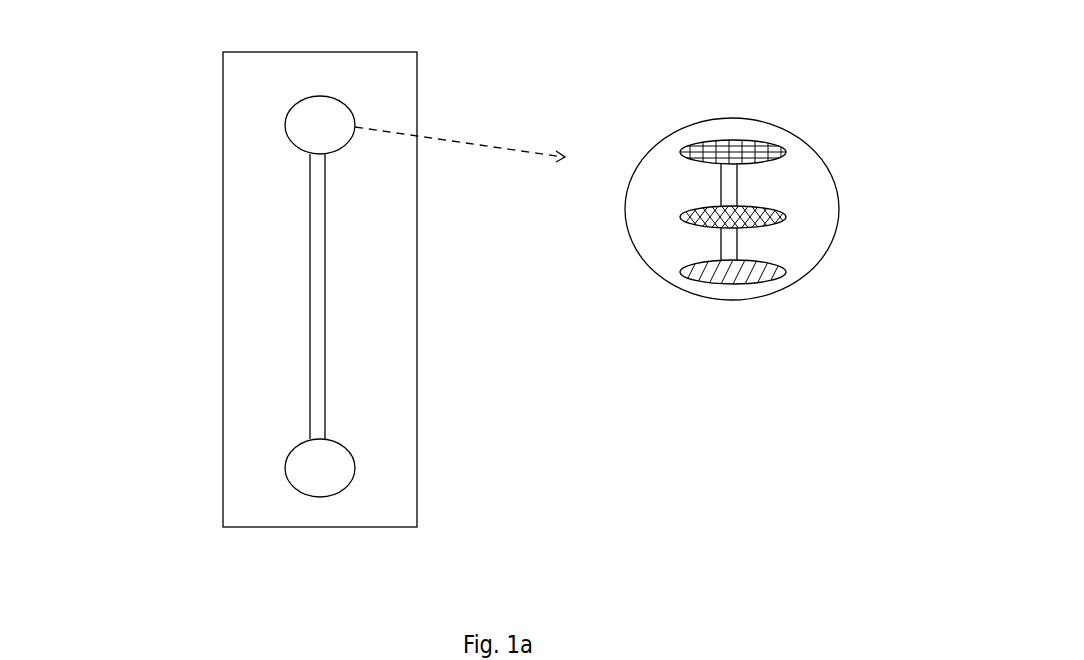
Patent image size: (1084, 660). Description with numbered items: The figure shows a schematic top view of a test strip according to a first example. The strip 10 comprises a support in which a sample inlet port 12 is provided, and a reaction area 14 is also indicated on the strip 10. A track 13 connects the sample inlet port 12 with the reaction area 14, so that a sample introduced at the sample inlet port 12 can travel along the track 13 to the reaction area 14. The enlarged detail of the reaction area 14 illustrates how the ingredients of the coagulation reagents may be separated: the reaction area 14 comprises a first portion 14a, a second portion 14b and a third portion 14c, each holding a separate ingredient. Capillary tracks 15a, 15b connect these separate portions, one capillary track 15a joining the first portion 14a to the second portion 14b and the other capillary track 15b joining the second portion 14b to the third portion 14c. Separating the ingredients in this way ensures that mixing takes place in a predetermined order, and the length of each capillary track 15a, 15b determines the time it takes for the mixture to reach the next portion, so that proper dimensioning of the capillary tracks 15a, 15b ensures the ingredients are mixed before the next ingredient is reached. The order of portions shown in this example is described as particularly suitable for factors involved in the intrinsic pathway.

The strip 10 is at (393, 73).
The sample inlet port 12 is at (310, 468).
The track 13 is at (325, 363).
The reaction area 14 is at (320, 125).
The first portion 14a is at (778, 261).
The second portion 14b is at (780, 208).
The third portion 14c is at (748, 143).
The capillary track 15a is at (720, 252).
The capillary track 15b is at (720, 179).